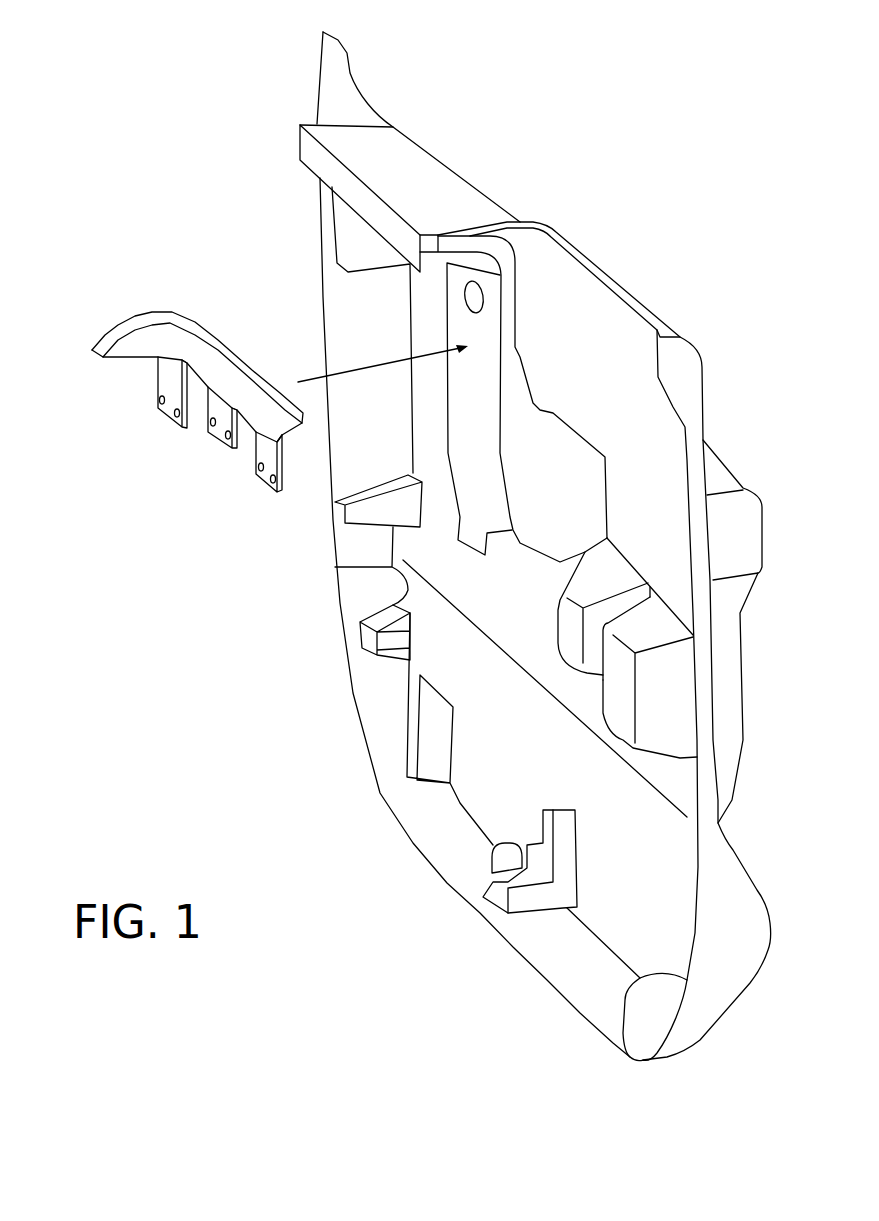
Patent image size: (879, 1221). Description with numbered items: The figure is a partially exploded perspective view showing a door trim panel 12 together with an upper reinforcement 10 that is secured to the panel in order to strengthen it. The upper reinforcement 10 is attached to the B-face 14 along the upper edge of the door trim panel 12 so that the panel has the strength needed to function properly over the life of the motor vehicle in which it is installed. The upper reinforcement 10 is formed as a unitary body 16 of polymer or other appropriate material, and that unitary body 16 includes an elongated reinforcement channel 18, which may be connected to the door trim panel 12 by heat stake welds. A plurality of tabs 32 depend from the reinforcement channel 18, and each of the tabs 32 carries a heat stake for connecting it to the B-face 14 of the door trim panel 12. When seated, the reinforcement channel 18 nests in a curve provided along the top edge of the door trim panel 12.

The upper reinforcement 10 is at (143, 280).
The door trim panel 12 is at (602, 275).
The B-face 14 is at (603, 350).
The unitary body 16 is at (293, 433).
The reinforcement channel 18 is at (228, 340).
The tabs 32 is at (260, 453).